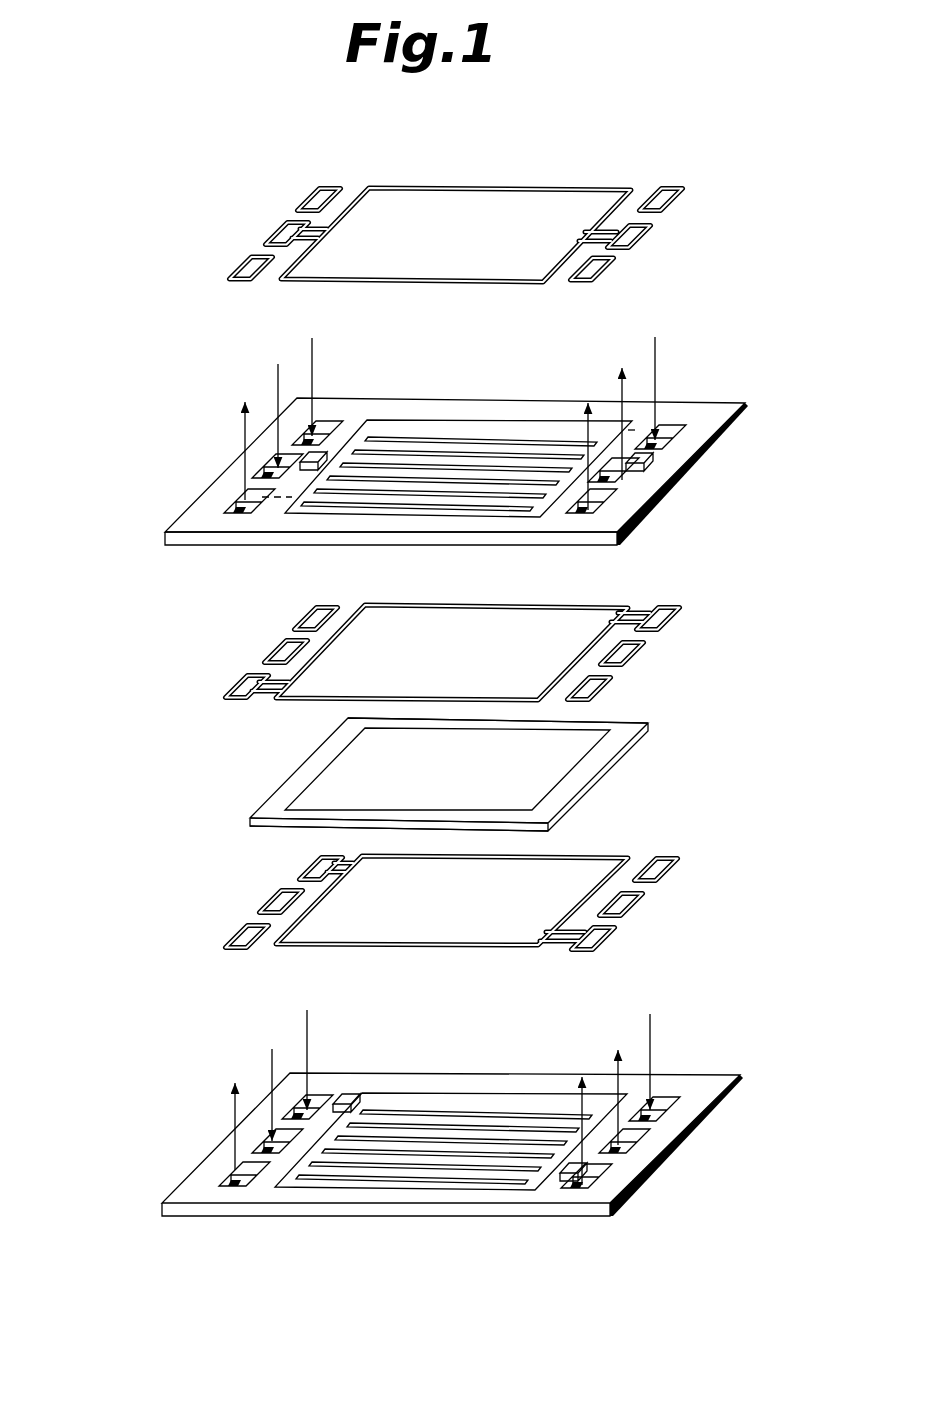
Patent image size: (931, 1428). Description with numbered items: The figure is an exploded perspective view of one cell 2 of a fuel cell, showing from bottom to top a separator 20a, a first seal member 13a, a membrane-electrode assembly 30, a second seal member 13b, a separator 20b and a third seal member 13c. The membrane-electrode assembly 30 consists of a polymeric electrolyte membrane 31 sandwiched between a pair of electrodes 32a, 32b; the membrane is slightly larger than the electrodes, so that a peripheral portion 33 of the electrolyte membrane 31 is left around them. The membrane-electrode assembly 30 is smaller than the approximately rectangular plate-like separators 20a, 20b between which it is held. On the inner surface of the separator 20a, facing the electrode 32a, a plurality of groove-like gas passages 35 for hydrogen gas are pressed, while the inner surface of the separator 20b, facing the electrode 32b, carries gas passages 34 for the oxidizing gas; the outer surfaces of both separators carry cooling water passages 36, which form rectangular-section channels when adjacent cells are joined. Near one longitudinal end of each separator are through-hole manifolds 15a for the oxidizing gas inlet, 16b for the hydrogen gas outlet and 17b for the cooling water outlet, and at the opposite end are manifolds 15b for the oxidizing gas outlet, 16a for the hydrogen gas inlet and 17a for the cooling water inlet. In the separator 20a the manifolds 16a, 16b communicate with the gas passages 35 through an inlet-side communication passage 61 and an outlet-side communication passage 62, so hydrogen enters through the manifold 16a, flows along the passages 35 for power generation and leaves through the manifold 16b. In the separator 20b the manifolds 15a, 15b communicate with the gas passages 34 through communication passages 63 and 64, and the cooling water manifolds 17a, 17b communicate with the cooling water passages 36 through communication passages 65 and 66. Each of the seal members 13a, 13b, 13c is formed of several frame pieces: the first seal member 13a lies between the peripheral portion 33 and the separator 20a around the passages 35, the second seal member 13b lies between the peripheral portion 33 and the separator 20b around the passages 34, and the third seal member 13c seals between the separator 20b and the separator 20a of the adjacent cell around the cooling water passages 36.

The cell 2 is at (822, 388).
The first seal member 13a is at (238, 905).
The second seal member 13b is at (238, 633).
The third seal member 13c is at (243, 193).
The inlet-side manifold for oxidizing gas 15a is at (240, 507).
The outlet-side manifold for oxidizing gas 15b is at (665, 443).
The inlet-side manifold for hydrogen gas 16a is at (596, 514).
The outlet-side manifold for hydrogen gas 16b is at (300, 432).
The inlet-side manifold for cooling water 17a is at (632, 472).
The outlet-side manifold for cooling water 17b is at (272, 470).
The separator 20a is at (381, 1144).
The separator 20b is at (425, 812).
The membrane-electrode assembly 30 is at (384, 786).
The polymeric electrolyte membrane 31 is at (262, 807).
The electrode 32a is at (290, 828).
The electrode 32b is at (290, 775).
The peripheral portion of the electrolyte membrane 33 is at (602, 750).
The gas passages of the oxidizing gas 34 is at (300, 547).
The gas passages of the hydrogen gas 35 is at (448, 1160).
The cooling water passages 36 is at (487, 436).
The inlet-side communication passage 61 is at (562, 1176).
The outlet-side communication passage 62 is at (333, 1098).
The inlet-side communication passage 63 is at (292, 489).
The outlet-side communication passage 64 is at (633, 430).
The inlet-side communication passage 65 is at (600, 483).
The outlet-side communication passage 66 is at (325, 452).